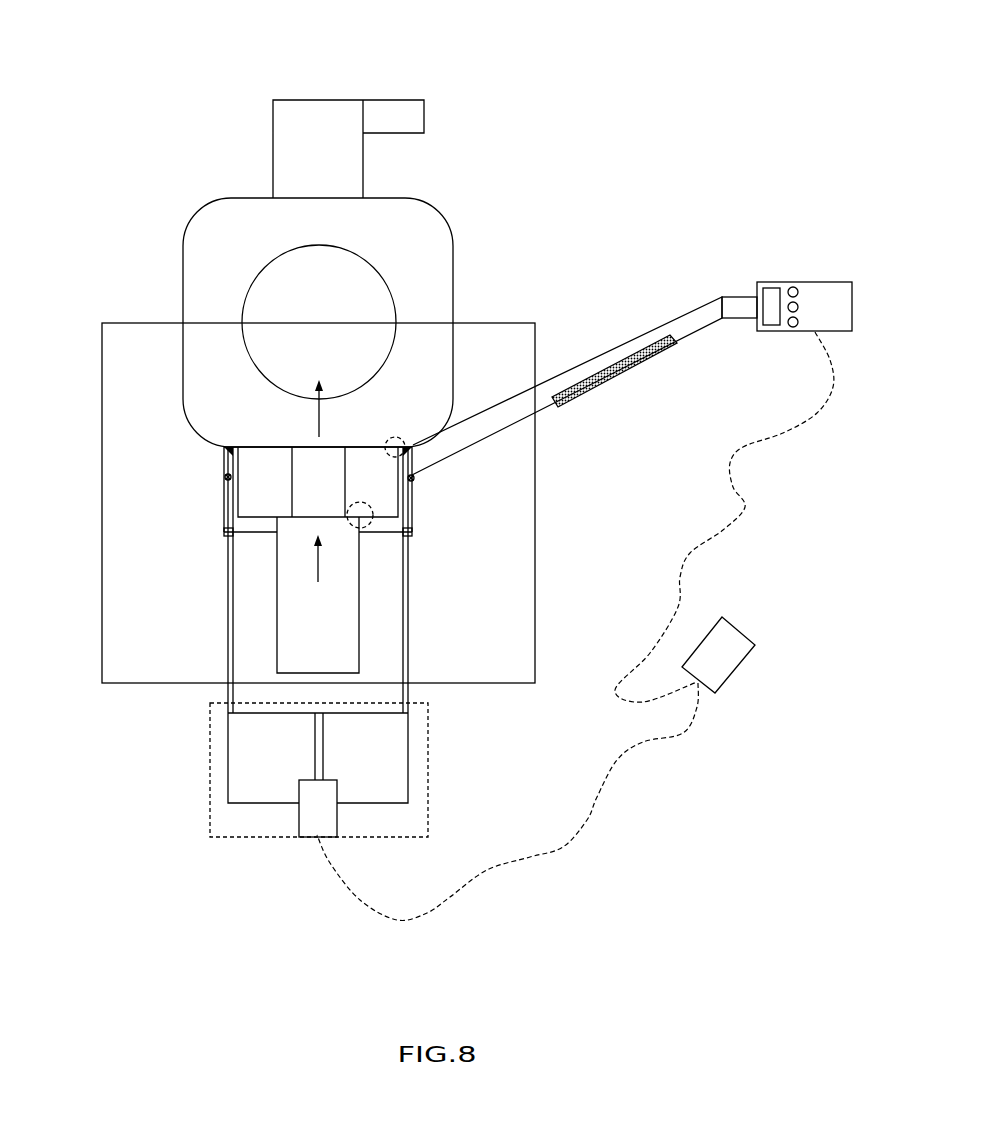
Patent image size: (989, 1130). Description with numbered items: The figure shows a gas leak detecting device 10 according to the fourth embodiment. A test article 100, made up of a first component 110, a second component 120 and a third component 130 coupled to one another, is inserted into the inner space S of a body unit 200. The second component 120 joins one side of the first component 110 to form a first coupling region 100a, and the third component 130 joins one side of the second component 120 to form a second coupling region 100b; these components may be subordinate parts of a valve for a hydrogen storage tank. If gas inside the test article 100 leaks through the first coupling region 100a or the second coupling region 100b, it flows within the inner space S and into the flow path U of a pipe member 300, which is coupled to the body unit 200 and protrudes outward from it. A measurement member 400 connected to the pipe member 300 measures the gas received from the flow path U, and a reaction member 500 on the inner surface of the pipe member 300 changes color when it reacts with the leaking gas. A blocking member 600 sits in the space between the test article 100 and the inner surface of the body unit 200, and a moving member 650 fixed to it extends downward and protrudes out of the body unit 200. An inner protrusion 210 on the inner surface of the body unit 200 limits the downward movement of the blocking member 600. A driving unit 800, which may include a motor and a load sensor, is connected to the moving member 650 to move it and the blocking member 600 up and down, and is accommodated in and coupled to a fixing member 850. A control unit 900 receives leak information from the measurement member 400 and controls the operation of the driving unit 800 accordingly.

The gas leak detecting device 10 is at (152, 33).
The test article 100 is at (307, 426).
The first component 110 is at (410, 277).
The first coupling region 100a is at (407, 443).
The second coupling region 100b is at (367, 533).
The second component 120 is at (378, 485).
The third component 130 is at (333, 660).
The body unit 200 is at (150, 612).
The inner protrusion 210 is at (227, 477).
The pipe member 300 is at (584, 362).
The measurement member 400 is at (825, 292).
The reaction member 500 is at (620, 377).
The blocking member 600 is at (225, 450).
The moving member 650 is at (225, 528).
The driving unit 800 is at (312, 815).
The fixing member 850 is at (413, 771).
The control unit 900 is at (726, 640).
The inner space S is at (262, 523).
The flow path U is at (520, 410).